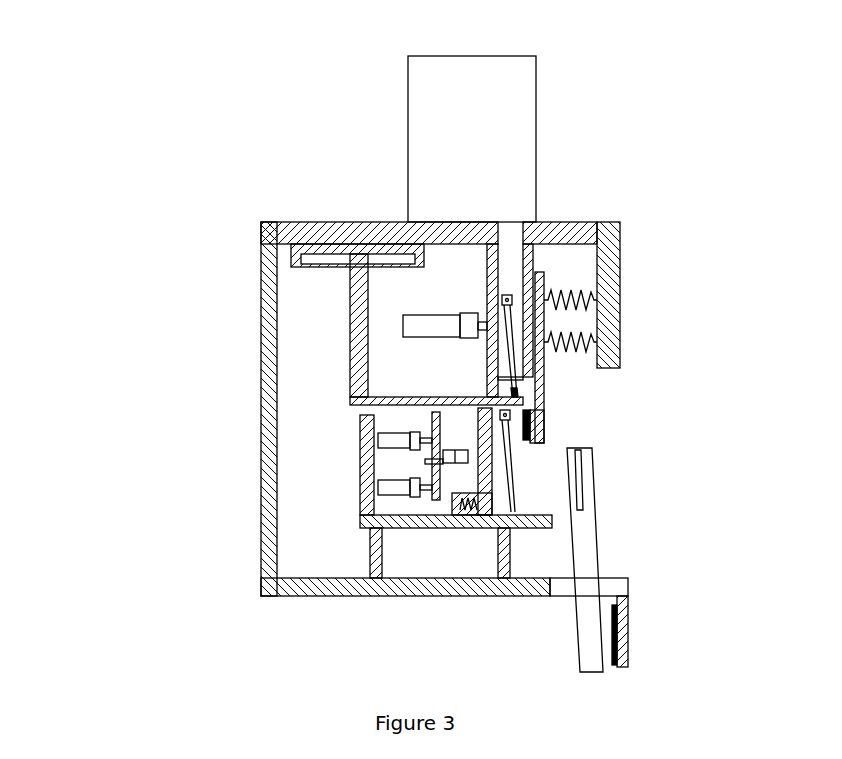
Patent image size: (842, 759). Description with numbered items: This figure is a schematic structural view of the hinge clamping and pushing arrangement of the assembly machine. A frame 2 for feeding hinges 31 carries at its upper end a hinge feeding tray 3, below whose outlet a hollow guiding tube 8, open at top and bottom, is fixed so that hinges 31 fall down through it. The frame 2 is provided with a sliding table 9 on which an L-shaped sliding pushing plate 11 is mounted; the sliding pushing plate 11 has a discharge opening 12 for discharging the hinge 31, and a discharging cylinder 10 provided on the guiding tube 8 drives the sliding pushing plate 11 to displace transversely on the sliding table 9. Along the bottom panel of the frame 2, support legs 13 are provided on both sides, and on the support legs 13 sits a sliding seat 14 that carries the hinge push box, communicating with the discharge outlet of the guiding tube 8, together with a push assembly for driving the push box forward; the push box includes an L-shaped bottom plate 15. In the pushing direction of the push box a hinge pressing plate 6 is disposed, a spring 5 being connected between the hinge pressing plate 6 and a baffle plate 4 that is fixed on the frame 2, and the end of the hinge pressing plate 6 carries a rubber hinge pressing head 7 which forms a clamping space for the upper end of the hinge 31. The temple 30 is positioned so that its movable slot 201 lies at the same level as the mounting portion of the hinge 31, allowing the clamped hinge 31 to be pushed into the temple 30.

The frame 2 is at (261, 537).
The hinge feeding tray 3 is at (440, 137).
The baffle plate 4 is at (620, 246).
The spring 5 is at (598, 323).
The hinge pressing plate 6 is at (545, 390).
The hinge pressing head 7 is at (530, 422).
The guiding tube 8 is at (548, 224).
The sliding table 9 is at (317, 243).
The discharging cylinder 10 is at (387, 325).
The sliding pushing plate 11 is at (350, 360).
The discharge opening 12 is at (440, 397).
The support leg 13 is at (373, 562).
The sliding seat 14 is at (427, 528).
The bottom plate 15 is at (488, 525).
The temple 30 is at (585, 542).
The hinge 31 is at (507, 313).
The movable slot 201 is at (567, 588).